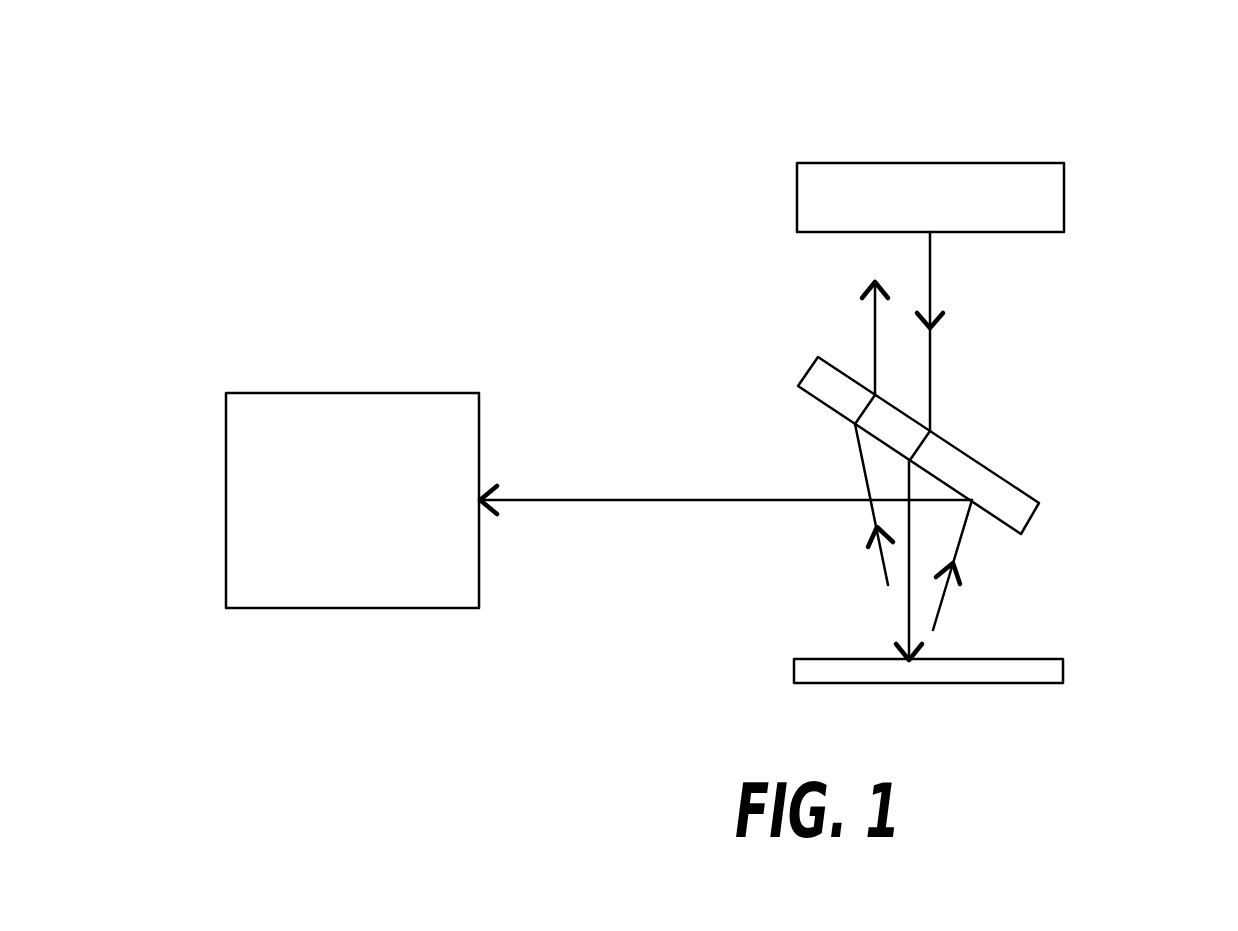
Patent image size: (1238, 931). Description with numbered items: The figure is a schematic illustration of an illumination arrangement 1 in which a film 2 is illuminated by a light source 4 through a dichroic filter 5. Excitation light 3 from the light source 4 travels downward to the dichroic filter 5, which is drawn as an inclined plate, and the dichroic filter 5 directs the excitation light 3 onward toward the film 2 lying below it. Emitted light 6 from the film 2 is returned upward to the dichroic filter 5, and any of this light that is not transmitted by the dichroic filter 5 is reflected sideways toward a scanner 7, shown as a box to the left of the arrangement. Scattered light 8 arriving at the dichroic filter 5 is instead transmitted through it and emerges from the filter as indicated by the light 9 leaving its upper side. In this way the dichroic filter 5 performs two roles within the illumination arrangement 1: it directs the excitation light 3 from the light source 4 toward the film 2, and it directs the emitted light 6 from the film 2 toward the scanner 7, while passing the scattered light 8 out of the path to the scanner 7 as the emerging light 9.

The illumination arrangement 1 is at (586, 184).
The film 2 is at (1063, 660).
The excitation light 3 is at (930, 280).
The light source 4 is at (890, 163).
The dichroic filter 5 is at (1039, 503).
The emitted light 6 is at (940, 612).
The scanner 7 is at (344, 393).
The scattered light 8 is at (886, 572).
The light emerging from the dichroic filter 9 is at (875, 317).